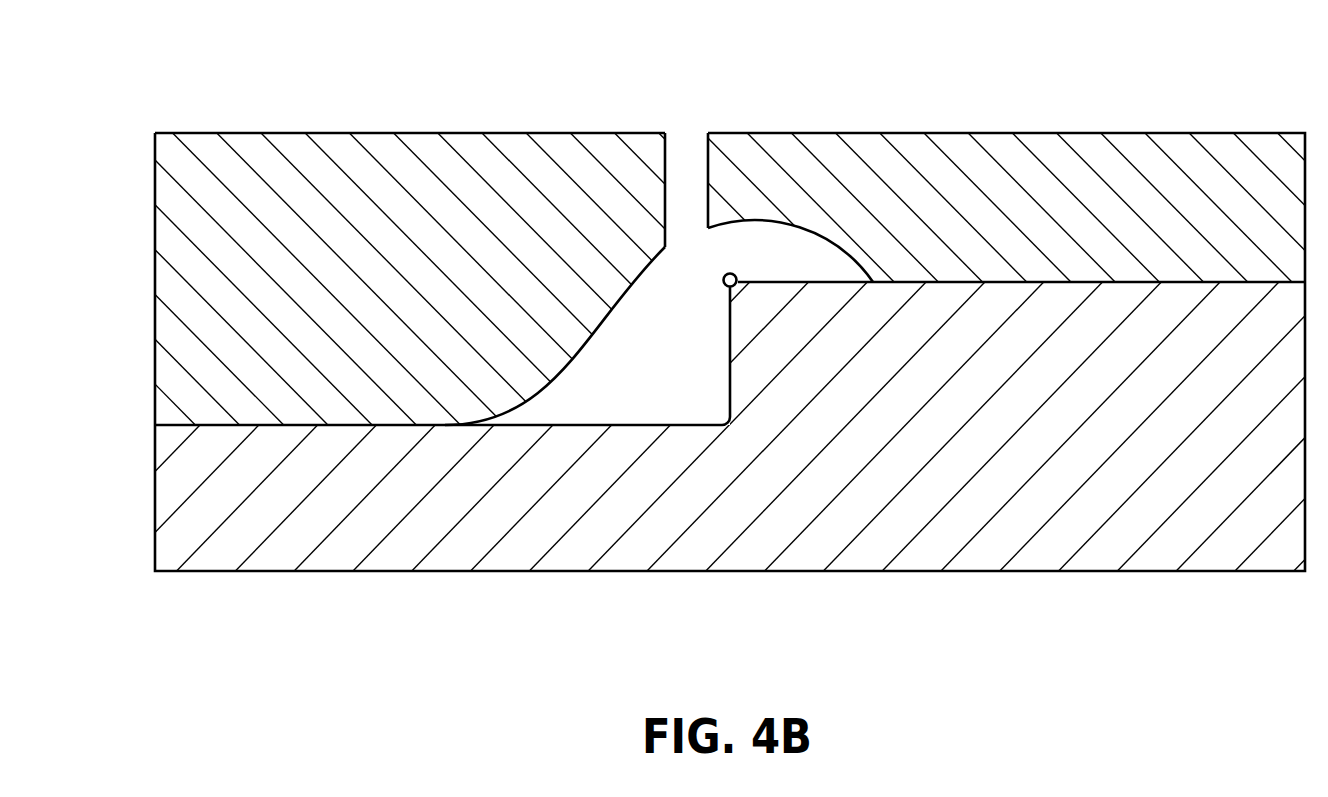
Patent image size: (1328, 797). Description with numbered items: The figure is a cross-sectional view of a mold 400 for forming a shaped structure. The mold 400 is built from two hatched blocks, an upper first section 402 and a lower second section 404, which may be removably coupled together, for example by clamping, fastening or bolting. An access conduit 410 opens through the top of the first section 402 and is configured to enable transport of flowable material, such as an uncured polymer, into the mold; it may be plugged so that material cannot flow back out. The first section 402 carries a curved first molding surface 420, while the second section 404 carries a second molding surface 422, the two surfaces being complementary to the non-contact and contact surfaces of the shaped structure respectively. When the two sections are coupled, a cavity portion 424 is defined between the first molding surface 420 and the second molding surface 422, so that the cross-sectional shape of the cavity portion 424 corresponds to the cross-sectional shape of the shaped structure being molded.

The mold 400 is at (664, 330).
The first section 402 is at (233, 133).
The second section 404 is at (230, 572).
The access conduit 410 is at (684, 195).
The first molding surface 420 is at (606, 298).
The second molding surface 422 is at (592, 428).
The cavity portion 424 is at (668, 316).